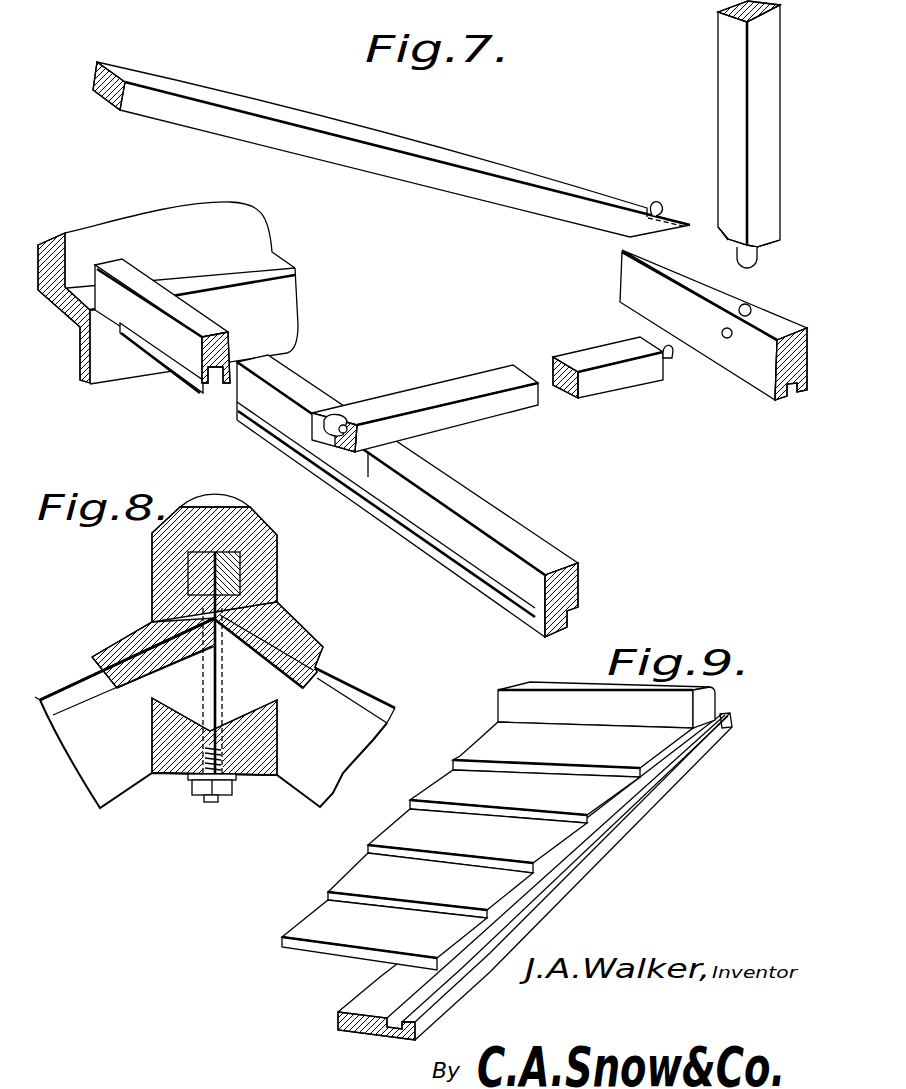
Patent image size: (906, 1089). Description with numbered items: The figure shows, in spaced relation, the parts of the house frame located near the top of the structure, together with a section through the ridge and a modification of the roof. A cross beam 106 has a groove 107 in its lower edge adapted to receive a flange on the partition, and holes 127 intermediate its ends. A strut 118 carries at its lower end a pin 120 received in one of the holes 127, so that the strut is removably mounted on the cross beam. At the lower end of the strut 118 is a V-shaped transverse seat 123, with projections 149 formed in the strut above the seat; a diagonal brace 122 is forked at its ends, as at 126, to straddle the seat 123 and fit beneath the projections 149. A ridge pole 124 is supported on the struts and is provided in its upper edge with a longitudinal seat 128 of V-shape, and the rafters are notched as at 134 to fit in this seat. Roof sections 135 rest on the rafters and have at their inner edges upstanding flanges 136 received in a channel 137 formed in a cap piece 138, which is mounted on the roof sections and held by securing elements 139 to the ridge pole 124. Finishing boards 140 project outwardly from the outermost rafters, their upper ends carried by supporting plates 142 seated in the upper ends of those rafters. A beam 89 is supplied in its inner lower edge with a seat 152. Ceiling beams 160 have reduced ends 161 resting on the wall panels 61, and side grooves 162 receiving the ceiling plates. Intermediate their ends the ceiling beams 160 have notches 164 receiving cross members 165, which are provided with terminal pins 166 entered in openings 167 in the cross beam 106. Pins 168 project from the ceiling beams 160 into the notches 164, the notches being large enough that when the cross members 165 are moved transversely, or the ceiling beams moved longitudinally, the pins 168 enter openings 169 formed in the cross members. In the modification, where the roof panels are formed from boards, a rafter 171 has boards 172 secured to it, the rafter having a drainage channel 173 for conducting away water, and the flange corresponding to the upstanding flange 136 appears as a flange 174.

In FIG. 7, the diagonal brace 122 is at (391, 149).
In FIG. 7, the forked ends 126 is at (653, 200).
In FIG. 7, the strut 118 is at (752, 139).
In FIG. 7, the projections 149 is at (722, 232).
In FIG. 7, the V-shaped transverse seat 123 is at (745, 246).
In FIG. 7, the pin 120 is at (757, 262).
In FIG. 7, the cross beam 106 is at (713, 342).
In FIG. 7, the holes 127 is at (750, 309).
In FIG. 7, the openings 167 is at (727, 339).
In FIG. 7, the terminal pins 166 is at (670, 358).
In FIG. 7, the groove 107 is at (794, 393).
In FIG. 7, the cross members 165 is at (603, 391).
In FIG. 7, the notches 164 is at (425, 410).
In FIG. 7, the pins 168 is at (332, 416).
In FIG. 7, the openings 169 is at (347, 426).
In FIG. 7, the ceiling beams 160 is at (439, 508).
In FIG. 7, the side grooves 162 is at (533, 612).
In FIG. 7, the seat 152 is at (63, 288).
In FIG. 7, the beam 89 is at (168, 296).
In FIG. 7, the reduced ends 161 is at (143, 288).
In FIG. 7, the wall panels 61 is at (128, 360).
In FIG. 8, the cap piece 138 is at (243, 556).
In FIG. 8, the upstanding flanges 136 is at (203, 570).
In FIG. 8, the channel 137 is at (234, 577).
In FIG. 8, the supporting plates 142 is at (138, 663).
In FIG. 8, the finishing boards 140 is at (108, 663).
In FIG. 8, the roof sections 135 is at (52, 687).
In FIG. 8, the notches 134 is at (177, 710).
In FIG. 8, the longitudinal seat 128 is at (250, 717).
In FIG. 8, the ridge pole 124 is at (185, 757).
In FIG. 8, the securing elements 139 is at (215, 802).
In FIG. 9, the flange 174 is at (505, 707).
In FIG. 9, the boards 172 is at (337, 928).
In FIG. 9, the rafter 171 is at (507, 895).
In FIG. 9, the drainage channels 173 is at (397, 1023).